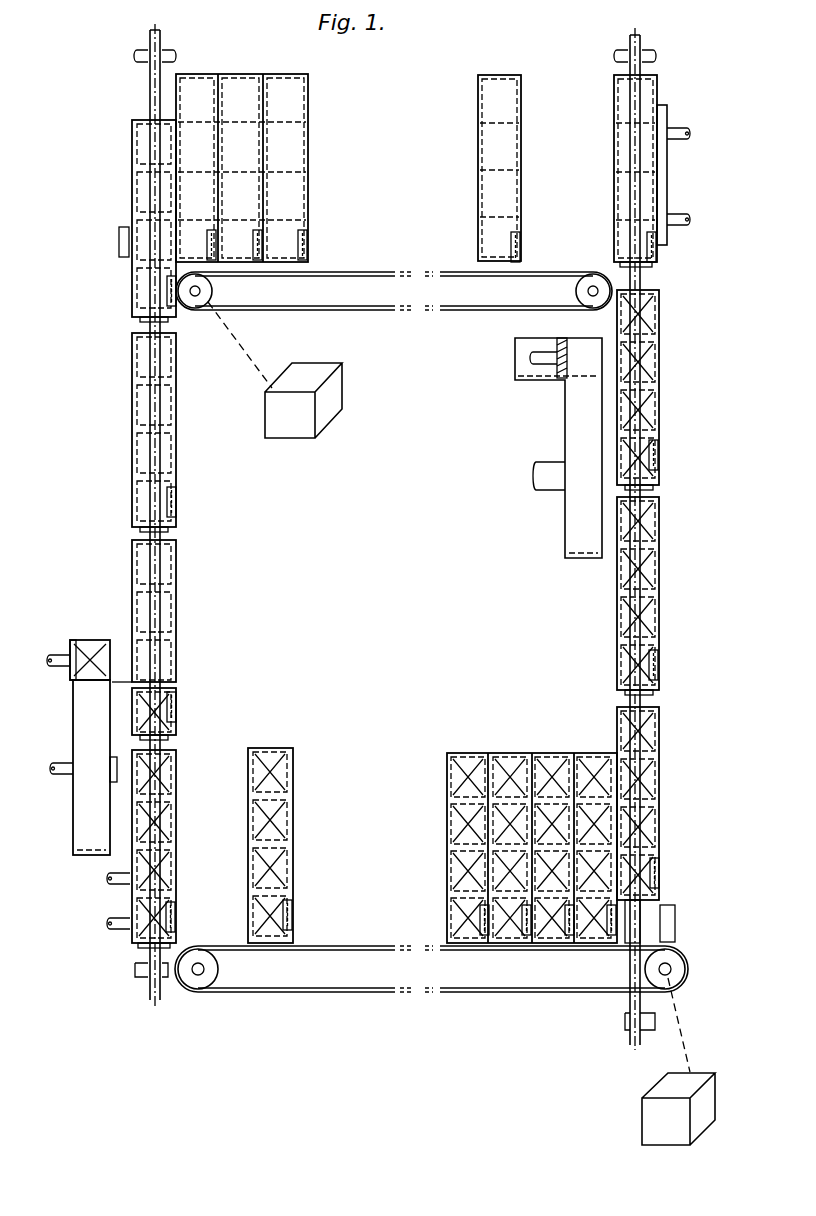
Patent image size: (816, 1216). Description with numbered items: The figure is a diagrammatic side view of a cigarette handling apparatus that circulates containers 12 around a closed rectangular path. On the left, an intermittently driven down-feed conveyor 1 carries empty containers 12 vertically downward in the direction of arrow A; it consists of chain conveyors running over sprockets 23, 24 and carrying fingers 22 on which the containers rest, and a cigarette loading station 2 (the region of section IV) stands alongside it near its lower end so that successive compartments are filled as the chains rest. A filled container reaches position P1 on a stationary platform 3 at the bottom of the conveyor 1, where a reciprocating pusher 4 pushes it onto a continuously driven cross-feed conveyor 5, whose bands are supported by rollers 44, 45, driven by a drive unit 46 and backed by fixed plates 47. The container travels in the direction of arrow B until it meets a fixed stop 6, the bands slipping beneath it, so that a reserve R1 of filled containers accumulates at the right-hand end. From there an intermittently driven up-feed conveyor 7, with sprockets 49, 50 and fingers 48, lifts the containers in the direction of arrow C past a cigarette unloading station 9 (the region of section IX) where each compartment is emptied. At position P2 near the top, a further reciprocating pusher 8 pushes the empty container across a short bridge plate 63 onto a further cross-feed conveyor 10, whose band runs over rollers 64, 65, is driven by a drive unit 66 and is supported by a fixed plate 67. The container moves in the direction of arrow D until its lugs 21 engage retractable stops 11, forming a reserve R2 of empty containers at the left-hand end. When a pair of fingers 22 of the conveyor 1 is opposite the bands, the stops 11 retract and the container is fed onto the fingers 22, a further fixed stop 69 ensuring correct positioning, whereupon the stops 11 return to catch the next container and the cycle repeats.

The down-feed conveyor 1 is at (148, 85).
The cigarette loading station 2 is at (68, 641).
The stationary platform 3 is at (134, 950).
The reciprocating pusher 4 is at (130, 906).
The cross-feed conveyor 5 is at (221, 942).
The stop 6 is at (676, 940).
The up-feed conveyor 7 is at (648, 921).
The reciprocating pusher 8 is at (660, 186).
The cigarette unloading station 9 is at (525, 387).
The further cross-feed conveyor 10 is at (534, 270).
The retractable stops 11 is at (172, 242).
The container 12 is at (130, 193).
The lug 21 is at (212, 242).
The fingers 22 is at (172, 335).
The sprockets 23 is at (163, 42).
The sprockets 24 is at (150, 986).
The rollers 44 is at (192, 986).
The rollers 45 is at (652, 972).
The drive unit 46 is at (652, 1122).
The fixed plates 47 is at (468, 953).
The fingers 48 is at (647, 290).
The sprockets 49 is at (628, 44).
The sprockets 50 is at (628, 1036).
The bridge plate 63 is at (625, 285).
The rollers 64 is at (208, 296).
The rollers 65 is at (592, 273).
The drive unit 66 is at (343, 384).
The fixed plate 67 is at (372, 277).
The fixed stop 69 is at (122, 242).
The reserve R1 is at (487, 752).
The reserve R2 is at (230, 70).
The position P1 is at (177, 857).
The position P2 is at (612, 149).
The arrow A is at (197, 405).
The arrow B is at (345, 845).
The arrow C is at (677, 672).
The arrow D is at (470, 171).
The section line IV is at (64, 746).
The section line IX is at (500, 452).